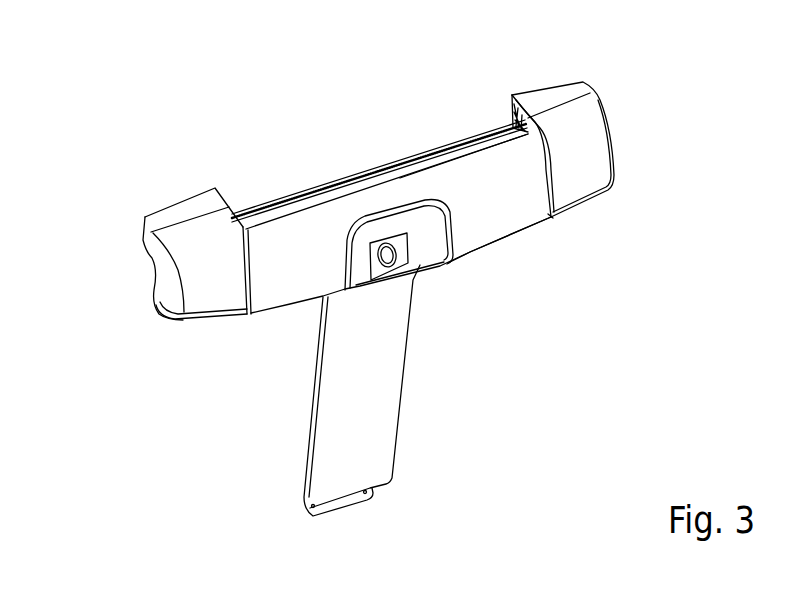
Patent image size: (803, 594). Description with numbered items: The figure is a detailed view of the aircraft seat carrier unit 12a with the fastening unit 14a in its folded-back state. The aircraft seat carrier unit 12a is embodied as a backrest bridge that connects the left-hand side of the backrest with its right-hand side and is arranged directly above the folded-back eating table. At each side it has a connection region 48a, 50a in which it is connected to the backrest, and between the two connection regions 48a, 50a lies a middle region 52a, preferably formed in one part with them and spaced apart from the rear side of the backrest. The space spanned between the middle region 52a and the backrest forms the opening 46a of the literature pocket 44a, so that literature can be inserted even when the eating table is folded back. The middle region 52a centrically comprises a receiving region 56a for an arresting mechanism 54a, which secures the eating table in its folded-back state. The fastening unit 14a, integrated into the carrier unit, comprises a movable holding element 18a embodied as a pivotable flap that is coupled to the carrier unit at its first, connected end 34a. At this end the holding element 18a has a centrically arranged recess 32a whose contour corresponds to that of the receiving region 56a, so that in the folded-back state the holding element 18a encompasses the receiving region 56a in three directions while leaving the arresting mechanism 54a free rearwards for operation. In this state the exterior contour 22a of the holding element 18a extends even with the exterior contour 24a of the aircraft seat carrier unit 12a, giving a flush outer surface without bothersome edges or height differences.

The aircraft seat carrier unit 12a is at (144, 288).
The fastening unit 14a is at (528, 253).
The movable holding element 18a is at (472, 167).
The exterior contour of the holding element 22a is at (278, 270).
The exterior contour of the aircraft seat carrier unit 24a is at (222, 284).
The recess 32a is at (442, 232).
The first, connected end 34a is at (541, 228).
The literature pocket 44a is at (281, 176).
The opening 46a is at (342, 165).
The connection region 48a is at (190, 240).
The connection region 50a is at (573, 127).
The middle region 52a is at (390, 190).
The arresting mechanism 54a is at (387, 288).
The receiving region 56a is at (423, 250).